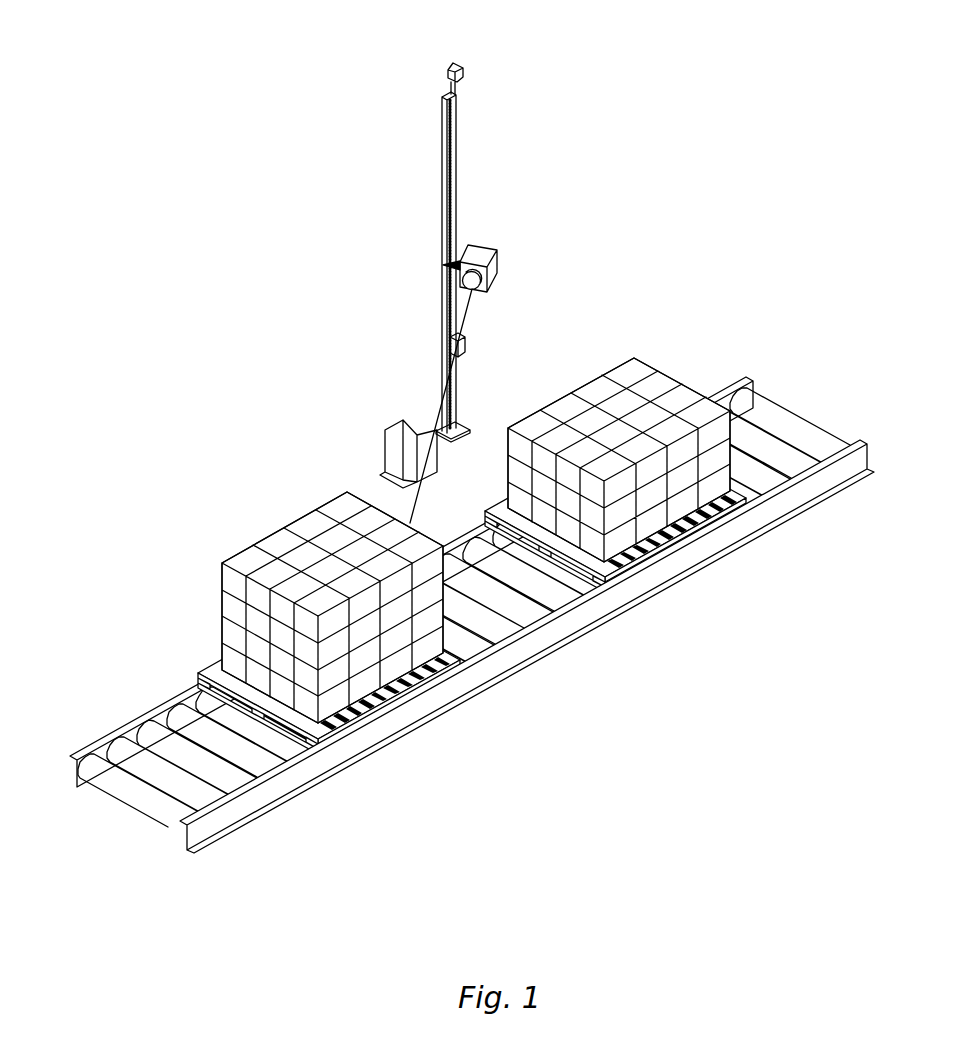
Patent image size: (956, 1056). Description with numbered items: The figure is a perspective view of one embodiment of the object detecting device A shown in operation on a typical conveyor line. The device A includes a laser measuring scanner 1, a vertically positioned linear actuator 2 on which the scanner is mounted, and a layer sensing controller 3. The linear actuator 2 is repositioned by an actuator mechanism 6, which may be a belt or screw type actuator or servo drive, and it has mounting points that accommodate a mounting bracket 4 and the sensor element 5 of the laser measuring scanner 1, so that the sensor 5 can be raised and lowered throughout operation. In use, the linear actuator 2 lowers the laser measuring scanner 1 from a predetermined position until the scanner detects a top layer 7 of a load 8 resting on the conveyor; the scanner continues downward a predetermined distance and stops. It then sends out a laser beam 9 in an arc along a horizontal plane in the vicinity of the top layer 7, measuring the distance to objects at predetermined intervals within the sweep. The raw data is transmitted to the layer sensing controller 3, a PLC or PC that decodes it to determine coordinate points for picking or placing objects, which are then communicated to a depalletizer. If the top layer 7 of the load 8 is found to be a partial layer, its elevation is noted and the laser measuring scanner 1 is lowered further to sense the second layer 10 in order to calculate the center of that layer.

The laser measuring scanner 1 is at (524, 242).
The linear actuator 2 is at (442, 150).
The layer sensing controller 3 is at (403, 420).
The mounting bracket 4 is at (445, 264).
The sensor element 5 is at (477, 288).
The actuator mechanism 6 is at (450, 68).
The top layer 7 is at (334, 631).
The load 8 is at (304, 720).
The laser beam 9 is at (410, 522).
The second layer 10 is at (396, 613).
The object detecting device A is at (206, 235).